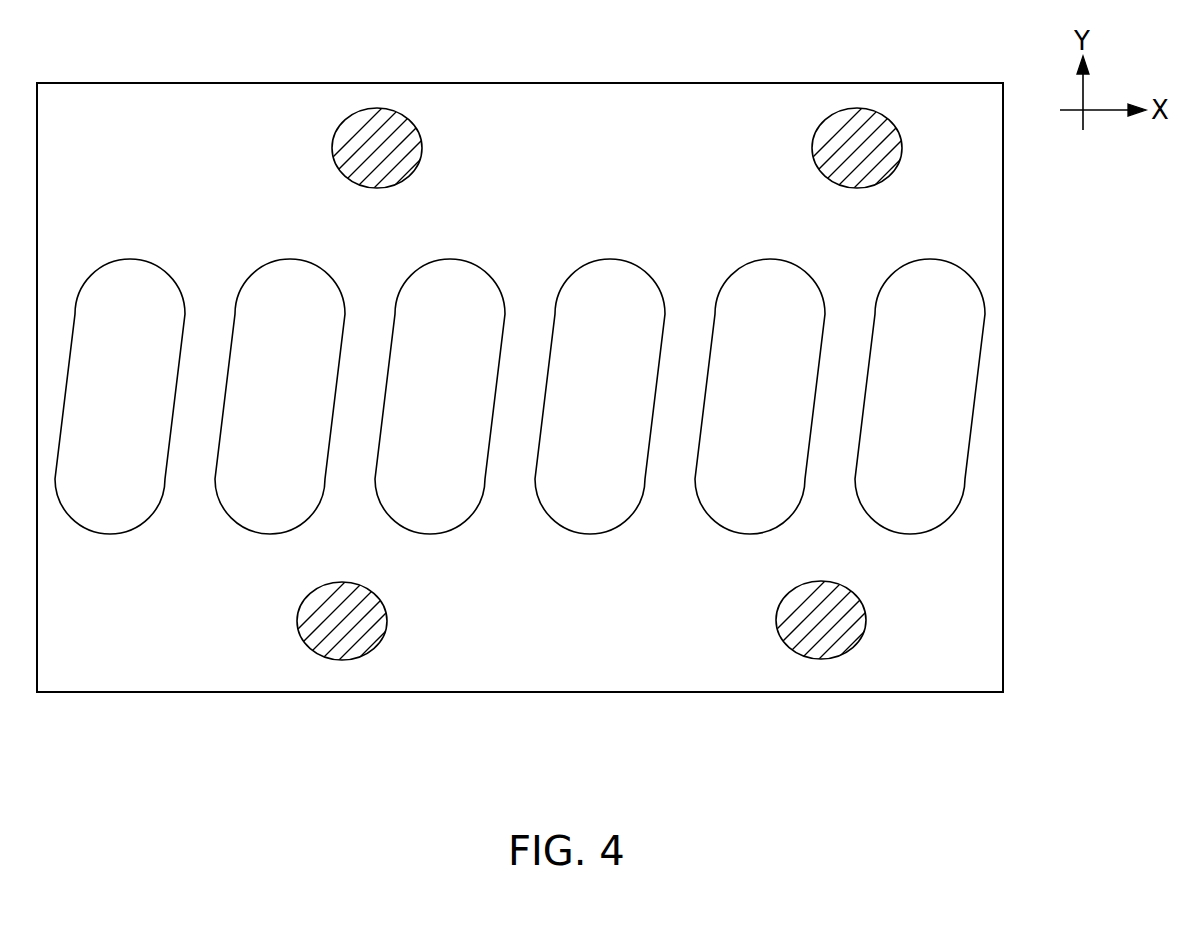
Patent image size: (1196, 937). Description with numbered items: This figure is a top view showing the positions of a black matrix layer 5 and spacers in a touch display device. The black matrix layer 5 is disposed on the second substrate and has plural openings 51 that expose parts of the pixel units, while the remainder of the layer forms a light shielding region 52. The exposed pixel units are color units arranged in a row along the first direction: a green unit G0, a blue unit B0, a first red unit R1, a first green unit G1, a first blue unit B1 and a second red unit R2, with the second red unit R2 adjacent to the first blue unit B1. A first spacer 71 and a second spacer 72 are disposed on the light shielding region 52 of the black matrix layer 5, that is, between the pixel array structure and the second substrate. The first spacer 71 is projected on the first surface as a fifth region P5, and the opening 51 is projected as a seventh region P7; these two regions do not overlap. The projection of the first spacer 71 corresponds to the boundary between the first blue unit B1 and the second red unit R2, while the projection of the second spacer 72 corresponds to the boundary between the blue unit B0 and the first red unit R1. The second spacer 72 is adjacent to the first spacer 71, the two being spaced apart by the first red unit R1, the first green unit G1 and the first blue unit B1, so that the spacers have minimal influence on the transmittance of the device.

The black matrix layer 5 is at (1065, 325).
The opening 51 is at (982, 350).
The light shielding region 52 is at (978, 488).
The first spacer 71 is at (826, 638).
The second spacer 72 is at (343, 638).
The fifth region P5 is at (867, 628).
The seventh region P7 is at (948, 518).
The green unit G0 is at (120, 396).
The blue unit B0 is at (280, 396).
The first red unit R1 is at (440, 396).
The first green unit G1 is at (600, 396).
The first blue unit B1 is at (760, 396).
The second red unit R2 is at (961, 396).